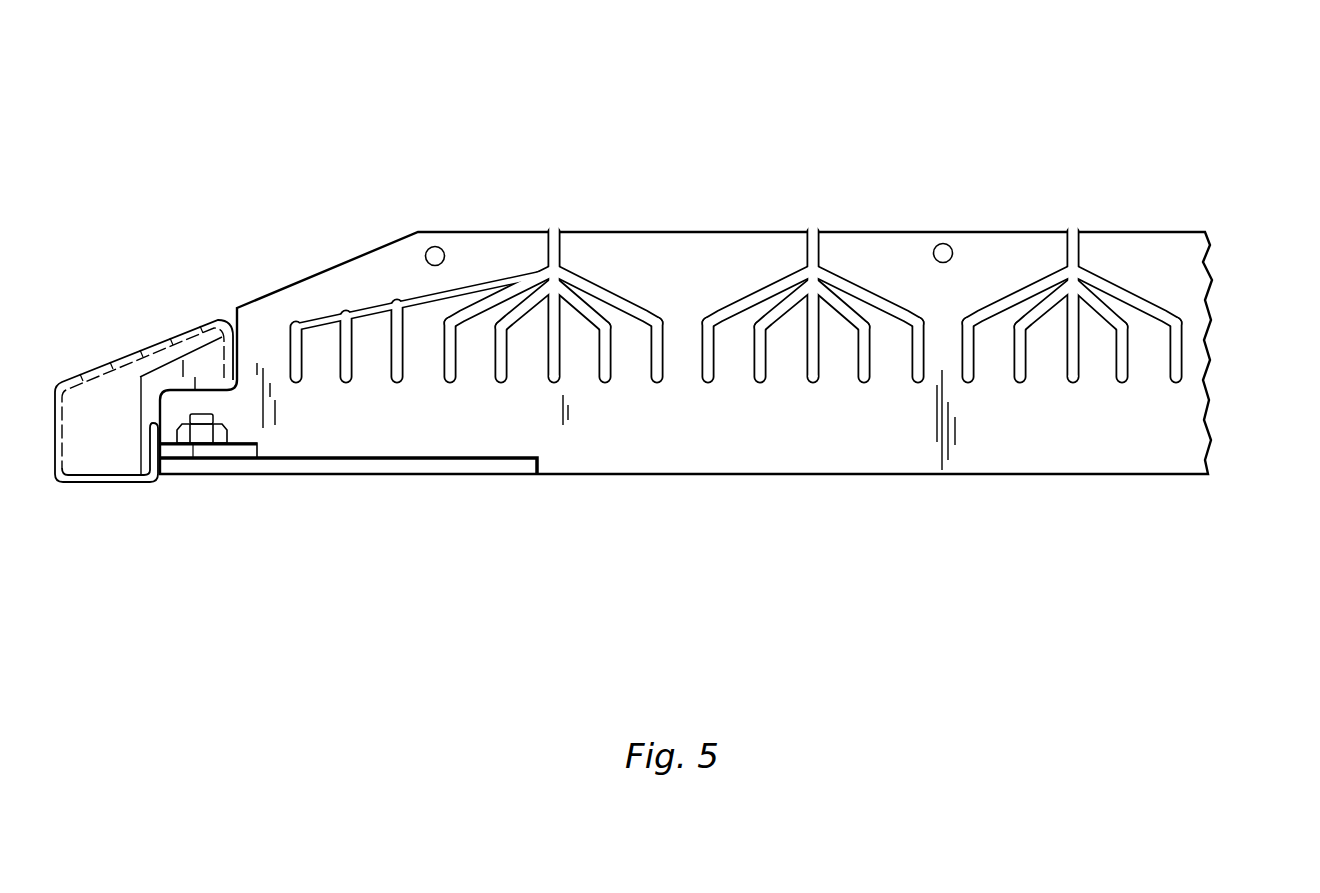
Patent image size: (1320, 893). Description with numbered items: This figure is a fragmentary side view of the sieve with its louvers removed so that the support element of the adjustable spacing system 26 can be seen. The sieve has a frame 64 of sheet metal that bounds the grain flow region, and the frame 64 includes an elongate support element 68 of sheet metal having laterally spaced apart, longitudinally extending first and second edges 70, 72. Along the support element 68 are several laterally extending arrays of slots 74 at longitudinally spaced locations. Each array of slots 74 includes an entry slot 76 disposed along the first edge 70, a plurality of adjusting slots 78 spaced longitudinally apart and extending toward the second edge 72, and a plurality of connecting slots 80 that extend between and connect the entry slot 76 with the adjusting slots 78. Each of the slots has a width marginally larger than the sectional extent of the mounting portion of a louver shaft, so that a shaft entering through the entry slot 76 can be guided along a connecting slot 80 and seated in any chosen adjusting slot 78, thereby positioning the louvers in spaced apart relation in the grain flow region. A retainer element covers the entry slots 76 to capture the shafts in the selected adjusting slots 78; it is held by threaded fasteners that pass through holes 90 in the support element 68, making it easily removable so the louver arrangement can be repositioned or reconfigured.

The adjustable spacing system 26 is at (175, 174).
The frame 64 is at (70, 486).
The support element 68 is at (255, 302).
The first edge 70 is at (735, 230).
The second edge 72 is at (562, 478).
The array of slots 74 is at (610, 276).
The entry slot 76 is at (556, 228).
The adjusting slot 78 is at (293, 379).
The connecting slot 80 is at (367, 305).
The hole 90 is at (441, 246).